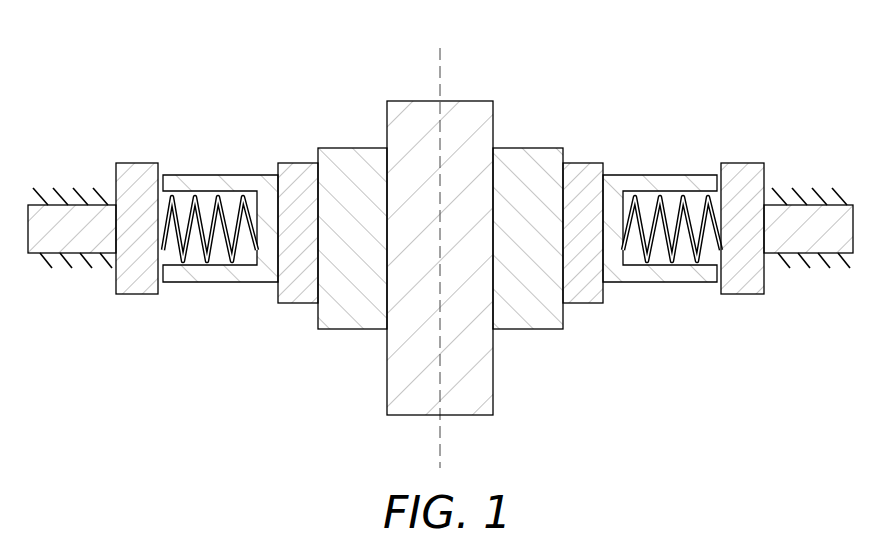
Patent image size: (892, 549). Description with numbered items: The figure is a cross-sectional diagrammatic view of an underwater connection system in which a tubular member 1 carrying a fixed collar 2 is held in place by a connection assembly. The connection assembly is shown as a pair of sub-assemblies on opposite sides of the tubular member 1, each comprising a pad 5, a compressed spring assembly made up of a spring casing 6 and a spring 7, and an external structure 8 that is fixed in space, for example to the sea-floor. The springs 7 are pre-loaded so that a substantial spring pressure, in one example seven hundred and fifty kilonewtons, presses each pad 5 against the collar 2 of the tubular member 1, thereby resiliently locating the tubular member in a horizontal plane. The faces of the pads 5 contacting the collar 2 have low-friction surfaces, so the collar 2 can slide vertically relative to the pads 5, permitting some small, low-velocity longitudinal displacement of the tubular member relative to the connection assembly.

The tubular member 1 is at (475, 101).
The collar 2 is at (331, 148).
The pad 5 is at (586, 163).
The spring casing 6 is at (665, 175).
The spring 7 is at (216, 196).
The external structure 8 is at (136, 163).